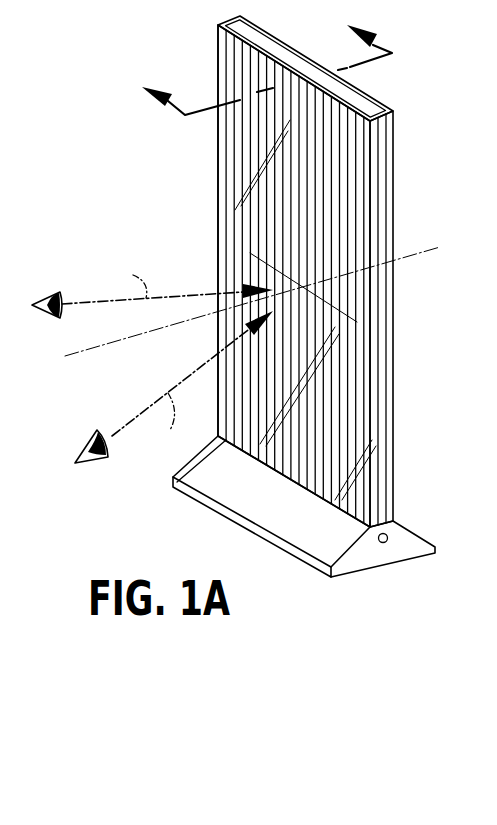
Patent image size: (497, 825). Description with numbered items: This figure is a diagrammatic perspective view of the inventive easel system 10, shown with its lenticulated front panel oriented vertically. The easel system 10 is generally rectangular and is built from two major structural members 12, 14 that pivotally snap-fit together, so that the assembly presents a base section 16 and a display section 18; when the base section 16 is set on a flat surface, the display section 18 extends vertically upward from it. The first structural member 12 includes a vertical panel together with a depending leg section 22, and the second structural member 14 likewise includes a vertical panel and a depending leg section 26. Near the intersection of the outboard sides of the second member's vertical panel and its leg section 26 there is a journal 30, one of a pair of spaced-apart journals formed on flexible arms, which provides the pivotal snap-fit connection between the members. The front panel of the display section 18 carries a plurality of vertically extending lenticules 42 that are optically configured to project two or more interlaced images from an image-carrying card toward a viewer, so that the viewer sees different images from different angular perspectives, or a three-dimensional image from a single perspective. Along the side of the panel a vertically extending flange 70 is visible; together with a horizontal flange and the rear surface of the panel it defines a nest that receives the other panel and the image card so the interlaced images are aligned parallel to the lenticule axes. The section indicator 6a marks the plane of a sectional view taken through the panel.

The easel system 10 is at (436, 98).
The structural member 12 is at (210, 149).
The structural member 14 is at (363, 77).
The base section 16 is at (432, 518).
The display section 18 is at (262, 215).
The leg section 22 is at (318, 536).
The leg section 26 is at (400, 525).
The journal 30 is at (388, 543).
The lenticules 42 is at (357, 420).
The vertically extending flange 70 is at (222, 238).
The section line 6a- 6a is at (256, 59).